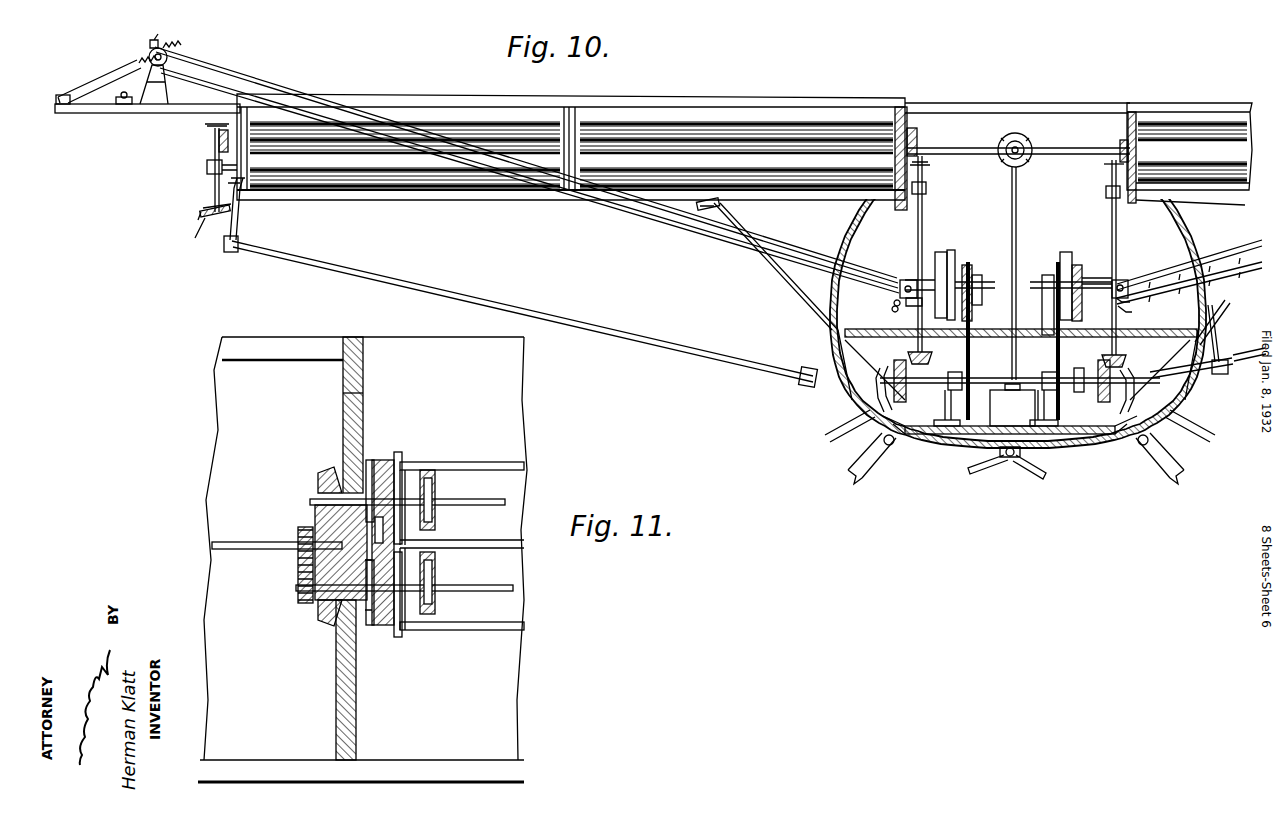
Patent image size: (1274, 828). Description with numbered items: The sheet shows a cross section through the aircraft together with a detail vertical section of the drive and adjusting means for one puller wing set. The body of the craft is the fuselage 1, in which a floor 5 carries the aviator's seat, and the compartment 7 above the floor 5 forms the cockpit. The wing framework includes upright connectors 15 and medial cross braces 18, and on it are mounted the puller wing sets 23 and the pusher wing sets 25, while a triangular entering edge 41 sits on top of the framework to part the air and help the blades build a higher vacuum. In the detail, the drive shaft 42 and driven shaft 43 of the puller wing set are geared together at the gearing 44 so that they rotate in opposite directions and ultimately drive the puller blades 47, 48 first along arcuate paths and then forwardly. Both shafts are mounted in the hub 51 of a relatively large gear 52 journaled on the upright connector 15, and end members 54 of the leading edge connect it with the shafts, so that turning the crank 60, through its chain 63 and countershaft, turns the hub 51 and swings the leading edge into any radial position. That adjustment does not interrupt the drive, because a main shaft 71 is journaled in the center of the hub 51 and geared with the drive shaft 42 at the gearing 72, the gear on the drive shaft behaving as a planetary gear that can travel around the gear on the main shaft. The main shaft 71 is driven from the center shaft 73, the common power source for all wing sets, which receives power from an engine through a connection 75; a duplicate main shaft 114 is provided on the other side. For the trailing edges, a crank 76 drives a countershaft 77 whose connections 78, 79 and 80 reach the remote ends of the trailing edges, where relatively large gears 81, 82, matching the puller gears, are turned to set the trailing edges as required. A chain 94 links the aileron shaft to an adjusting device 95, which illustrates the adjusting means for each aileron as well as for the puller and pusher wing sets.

In FIG. 10, the fuselage 1 is at (850, 236).
In FIG. 10, the floor 5 is at (1000, 333).
In FIG. 10, the compartment 7 is at (1041, 246).
In FIG. 11, the upright connector 15 is at (350, 407).
In FIG. 10, the medial cross brace 18 is at (606, 95).
In FIG. 11, the puller wing set 23 is at (504, 457).
In FIG. 10, the pusher wing set 25 is at (453, 168).
In FIG. 10, the triangular entering edge 41 is at (448, 95).
In FIG. 11, the drive shaft 42 is at (500, 583).
In FIG. 11, the driven shaft 43 is at (500, 495).
In FIG. 11, the gearing 44 is at (423, 452).
In FIG. 11, the puller blade 47 is at (496, 658).
In FIG. 11, the puller blade 48 is at (482, 454).
In FIG. 11, the hub 51 is at (312, 611).
In FIG. 11, the large gear 52 is at (320, 469).
In FIG. 11, the end member 54 is at (372, 471).
In FIG. 10, the crank 60 is at (895, 303).
In FIG. 10, the chain 63 is at (970, 372).
In FIG. 10, the main shaft 71 is at (957, 152).
In FIG. 11, the main shaft 71 is at (246, 536).
In FIG. 11, the gearing 72 is at (300, 565).
In FIG. 10, the center shaft 73 is at (1016, 147).
In FIG. 10, the connection 75 is at (1012, 200).
In FIG. 10, the crank 76 is at (1132, 313).
In FIG. 10, the countershaft 77 is at (1025, 380).
In FIG. 10, the connection 78 is at (920, 222).
In FIG. 10, the connection 79 is at (407, 290).
In FIG. 10, the connection 80 is at (208, 166).
In FIG. 10, the large gear 81 is at (940, 129).
In FIG. 10, the large gear 82 is at (218, 141).
In FIG. 10, the chain 94 is at (1207, 263).
In FIG. 10, the adjusting device 95 is at (938, 262).
In FIG. 10, the duplicate main shaft 114 is at (1087, 130).